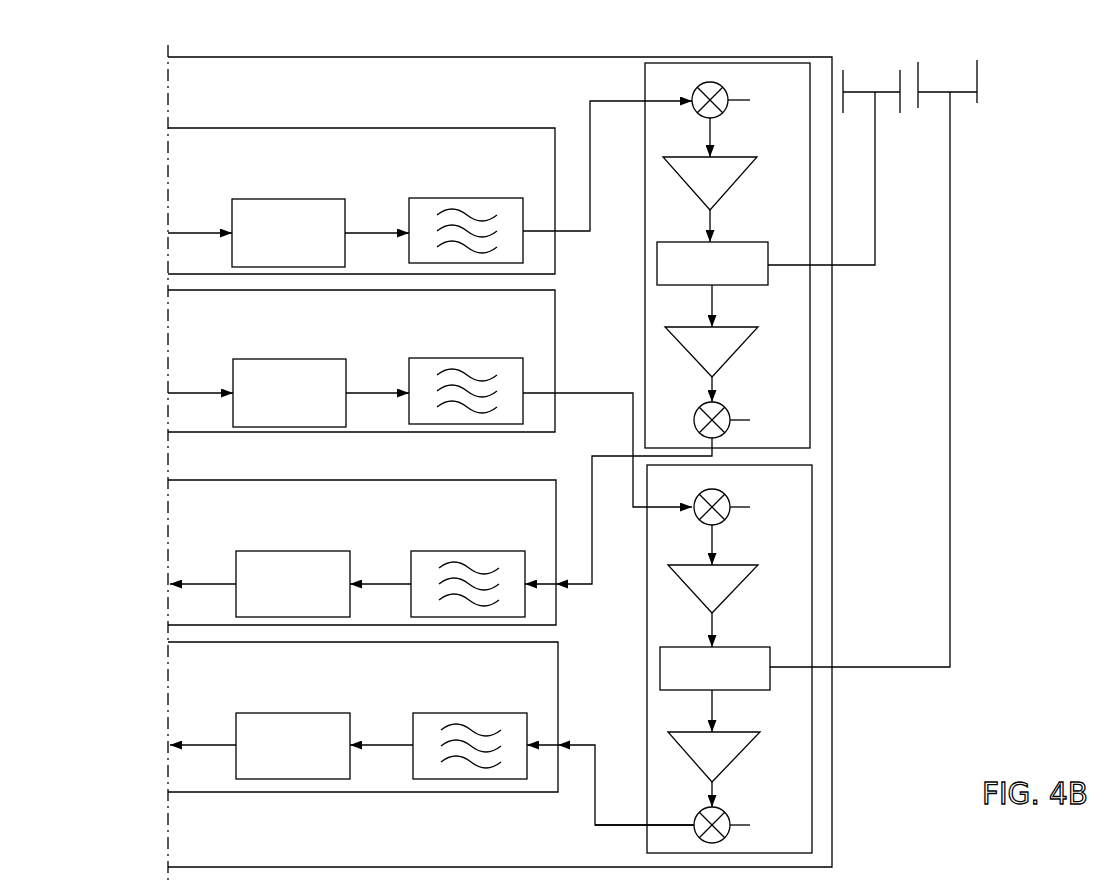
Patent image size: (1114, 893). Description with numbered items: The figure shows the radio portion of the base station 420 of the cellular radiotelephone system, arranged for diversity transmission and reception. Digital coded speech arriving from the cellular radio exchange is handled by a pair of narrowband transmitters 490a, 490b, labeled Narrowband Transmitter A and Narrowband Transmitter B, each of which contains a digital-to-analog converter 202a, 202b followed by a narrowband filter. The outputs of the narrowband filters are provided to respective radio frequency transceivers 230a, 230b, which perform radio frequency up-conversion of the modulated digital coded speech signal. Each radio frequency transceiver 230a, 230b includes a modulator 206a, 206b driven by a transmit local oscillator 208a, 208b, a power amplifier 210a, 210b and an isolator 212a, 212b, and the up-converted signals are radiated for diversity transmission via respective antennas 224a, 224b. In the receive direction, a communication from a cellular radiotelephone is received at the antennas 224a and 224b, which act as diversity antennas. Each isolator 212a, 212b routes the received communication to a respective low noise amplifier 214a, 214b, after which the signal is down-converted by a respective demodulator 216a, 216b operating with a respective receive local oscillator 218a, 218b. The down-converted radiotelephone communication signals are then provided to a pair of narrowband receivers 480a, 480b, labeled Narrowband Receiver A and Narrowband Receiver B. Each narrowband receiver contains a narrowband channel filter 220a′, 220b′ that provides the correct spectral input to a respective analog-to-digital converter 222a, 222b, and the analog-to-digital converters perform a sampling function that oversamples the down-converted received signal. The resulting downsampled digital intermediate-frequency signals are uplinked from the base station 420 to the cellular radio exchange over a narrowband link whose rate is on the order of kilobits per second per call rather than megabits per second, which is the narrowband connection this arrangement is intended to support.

The base station 420 is at (835, 808).
The narrowband transmitter 490a is at (493, 128).
The narrowband transmitter 490b is at (558, 302).
The narrowband receiver 480a is at (548, 462).
The narrowband receiver 480b is at (560, 656).
The digital-to-analog converter 202a is at (330, 182).
The digital-to-analog converter 202b is at (330, 343).
The analog-to-digital converter 222a is at (335, 533).
The analog-to-digital converter 222b is at (335, 695).
The narrowband channel filter 220a′ is at (522, 532).
The narrowband channel filter 220b′ is at (522, 695).
The radio frequency transceiver 230a is at (645, 92).
The radio frequency transceiver 230b is at (648, 835).
The modulator 206a is at (692, 93).
The modulator 206b is at (727, 501).
The transmit local oscillator 208a is at (746, 105).
The transmit local oscillator 208b is at (745, 510).
The power amplifier 210a is at (693, 157).
The power amplifier 210b is at (695, 565).
The isolator 212a is at (738, 242).
The isolator 212b is at (738, 647).
The low noise amplifier 214a is at (750, 313).
The low noise amplifier 214b is at (755, 720).
The demodulator 216a is at (694, 412).
The demodulator 216b is at (696, 816).
The receive local oscillator 218a is at (742, 415).
The receive local oscillator 218b is at (745, 820).
The antenna 224a is at (876, 178).
The antenna 224b is at (952, 155).